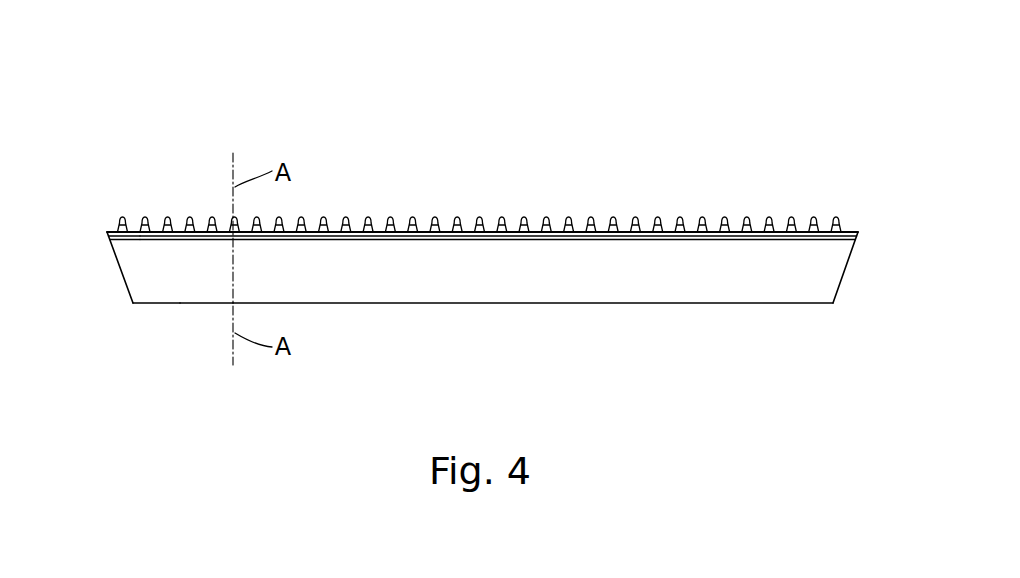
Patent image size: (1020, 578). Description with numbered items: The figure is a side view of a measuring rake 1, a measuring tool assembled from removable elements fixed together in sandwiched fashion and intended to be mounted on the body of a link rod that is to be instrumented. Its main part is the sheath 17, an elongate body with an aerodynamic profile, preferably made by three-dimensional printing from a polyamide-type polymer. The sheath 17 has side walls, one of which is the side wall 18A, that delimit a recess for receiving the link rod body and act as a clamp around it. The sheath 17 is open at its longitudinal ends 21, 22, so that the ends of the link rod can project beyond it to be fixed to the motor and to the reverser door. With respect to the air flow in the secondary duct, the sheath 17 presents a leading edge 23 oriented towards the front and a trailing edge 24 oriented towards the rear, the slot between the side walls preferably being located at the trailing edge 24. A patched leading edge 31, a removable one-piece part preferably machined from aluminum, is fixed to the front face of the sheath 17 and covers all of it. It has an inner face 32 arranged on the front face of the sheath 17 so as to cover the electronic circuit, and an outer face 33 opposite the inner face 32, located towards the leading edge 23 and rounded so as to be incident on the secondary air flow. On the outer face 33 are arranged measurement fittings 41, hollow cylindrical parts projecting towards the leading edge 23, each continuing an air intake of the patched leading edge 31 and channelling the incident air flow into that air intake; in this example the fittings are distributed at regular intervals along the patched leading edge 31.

The measuring rake 1 is at (774, 172).
The sheath 17 is at (162, 280).
The side wall 18A is at (210, 285).
The longitudinal end 21 is at (116, 281).
The longitudinal end 22 is at (849, 275).
The leading edge 23 is at (462, 186).
The trailing edge 24 is at (470, 323).
The patched leading edge 31 is at (106, 232).
The inner face 32 is at (135, 245).
The outer face 33 is at (131, 224).
The measurement fittings 41 is at (343, 220).